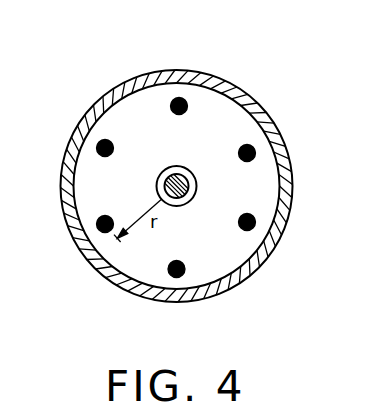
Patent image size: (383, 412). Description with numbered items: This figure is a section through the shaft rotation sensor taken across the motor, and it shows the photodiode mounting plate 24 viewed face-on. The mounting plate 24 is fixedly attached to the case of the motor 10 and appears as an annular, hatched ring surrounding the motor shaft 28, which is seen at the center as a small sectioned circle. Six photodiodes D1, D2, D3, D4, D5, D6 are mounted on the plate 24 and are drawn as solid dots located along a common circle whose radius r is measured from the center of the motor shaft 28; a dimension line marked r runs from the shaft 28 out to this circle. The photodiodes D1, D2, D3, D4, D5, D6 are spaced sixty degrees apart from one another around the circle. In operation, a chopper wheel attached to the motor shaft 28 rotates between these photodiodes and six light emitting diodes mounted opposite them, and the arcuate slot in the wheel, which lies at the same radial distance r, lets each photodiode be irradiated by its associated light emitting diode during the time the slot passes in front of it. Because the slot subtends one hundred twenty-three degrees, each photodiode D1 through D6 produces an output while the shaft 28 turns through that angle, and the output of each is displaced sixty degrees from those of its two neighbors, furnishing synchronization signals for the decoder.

The motor 10 is at (105, 95).
The photodiode mounting plate 24 is at (225, 263).
The motor shaft 28 is at (177, 166).
The photodiode D1 is at (179, 100).
The photodiode D2 is at (255, 152).
The photodiode D3 is at (255, 222).
The photodiode D4 is at (177, 277).
The photodiode D5 is at (99, 229).
The photodiode D6 is at (97, 150).